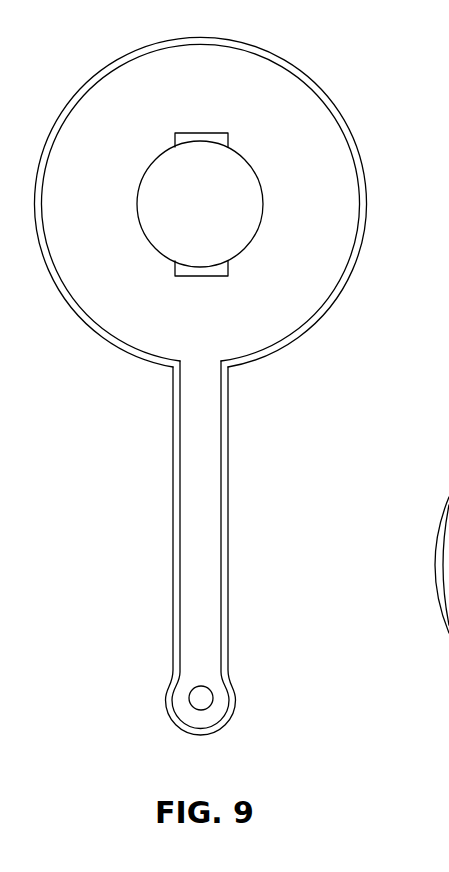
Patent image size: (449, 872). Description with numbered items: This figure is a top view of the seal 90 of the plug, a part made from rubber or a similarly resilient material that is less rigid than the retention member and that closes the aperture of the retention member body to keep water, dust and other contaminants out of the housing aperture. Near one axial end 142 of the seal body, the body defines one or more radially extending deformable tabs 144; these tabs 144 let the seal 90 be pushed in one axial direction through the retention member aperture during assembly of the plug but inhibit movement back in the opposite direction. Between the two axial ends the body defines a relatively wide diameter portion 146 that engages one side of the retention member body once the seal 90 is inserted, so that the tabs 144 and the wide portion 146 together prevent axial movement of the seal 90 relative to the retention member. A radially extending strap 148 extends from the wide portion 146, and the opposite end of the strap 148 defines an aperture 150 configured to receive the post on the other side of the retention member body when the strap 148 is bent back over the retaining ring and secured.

The seal 90 is at (237, 386).
The axial end 142 is at (186, 195).
The deformable tabs 144 is at (212, 133).
The wide diameter portion 146 is at (285, 292).
The strap 148 is at (200, 527).
The aperture 150 is at (207, 695).